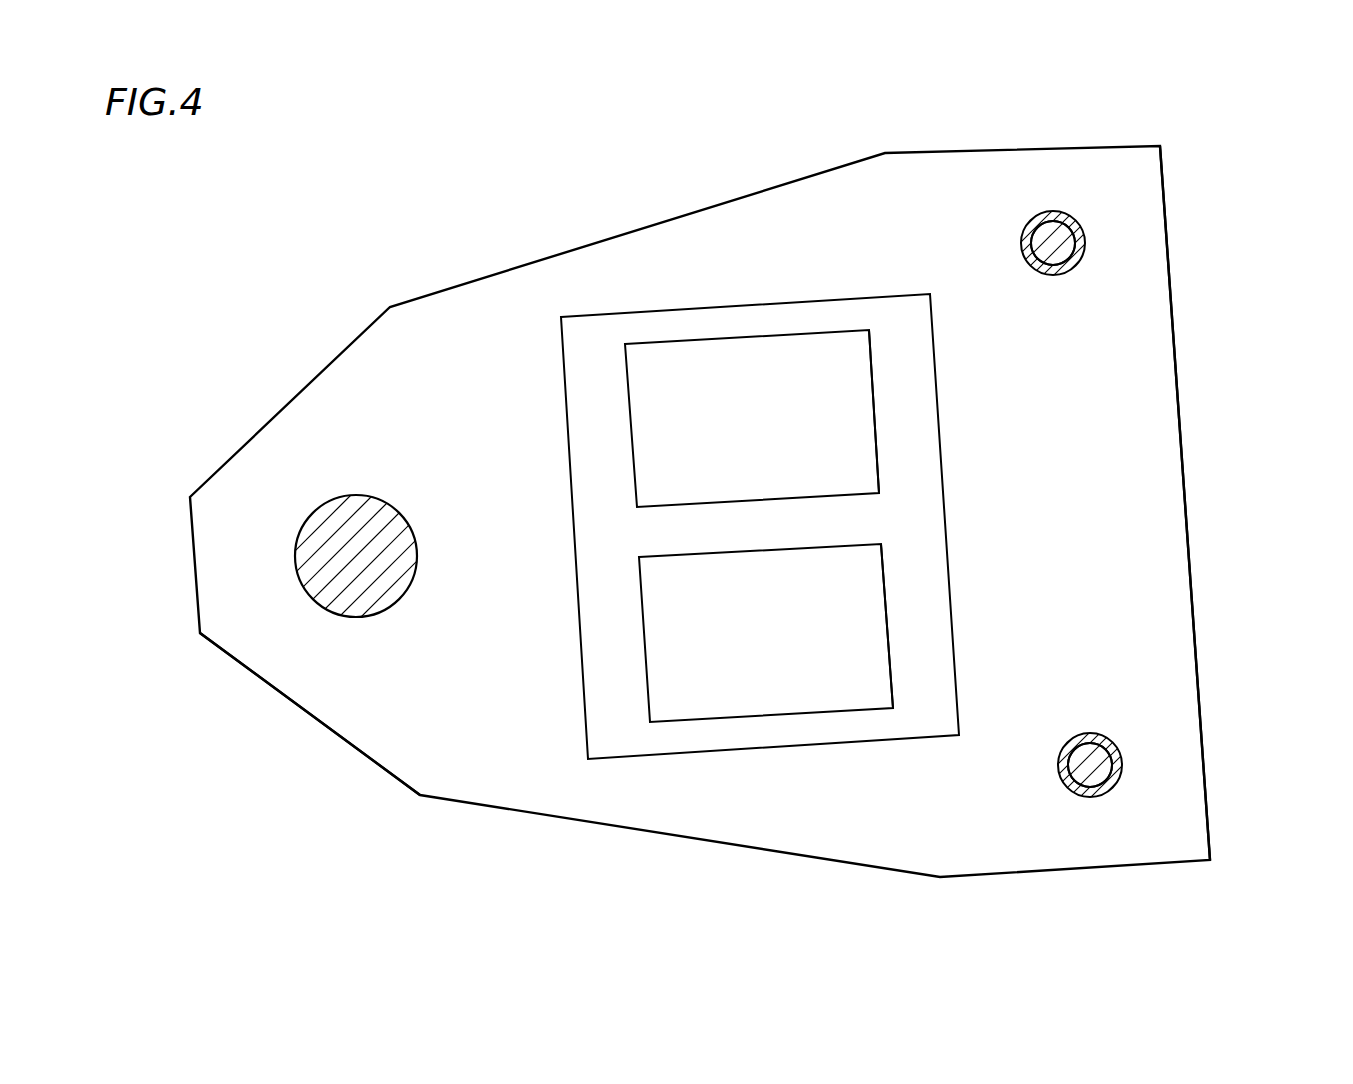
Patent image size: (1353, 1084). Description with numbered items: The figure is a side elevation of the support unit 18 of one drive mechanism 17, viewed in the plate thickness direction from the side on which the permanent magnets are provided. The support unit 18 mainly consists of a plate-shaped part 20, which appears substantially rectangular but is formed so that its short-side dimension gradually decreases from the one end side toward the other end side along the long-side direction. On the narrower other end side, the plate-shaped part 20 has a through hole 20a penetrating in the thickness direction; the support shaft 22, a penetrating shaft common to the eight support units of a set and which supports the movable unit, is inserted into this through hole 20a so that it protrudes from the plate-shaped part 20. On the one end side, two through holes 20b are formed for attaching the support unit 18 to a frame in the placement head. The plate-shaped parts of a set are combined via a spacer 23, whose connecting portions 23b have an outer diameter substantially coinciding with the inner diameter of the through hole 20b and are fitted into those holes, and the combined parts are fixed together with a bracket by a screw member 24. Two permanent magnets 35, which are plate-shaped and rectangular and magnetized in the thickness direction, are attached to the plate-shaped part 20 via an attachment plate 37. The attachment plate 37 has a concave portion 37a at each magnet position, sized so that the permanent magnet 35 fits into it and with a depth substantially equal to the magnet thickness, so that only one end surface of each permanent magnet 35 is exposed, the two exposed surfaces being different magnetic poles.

The drive mechanism 17 is at (481, 198).
The support unit 18 is at (387, 794).
The plate-shaped part 20 is at (1160, 370).
The through hole 20a is at (334, 599).
The through hole 20b is at (1064, 222).
The support shaft 22 is at (325, 512).
The spacer 23 is at (1168, 570).
The connecting portion 23b is at (1086, 240).
The screw member 24 is at (1046, 222).
The permanent magnet 35 is at (664, 352).
The attachment plate 37 is at (594, 700).
The concave portion 37a is at (869, 410).